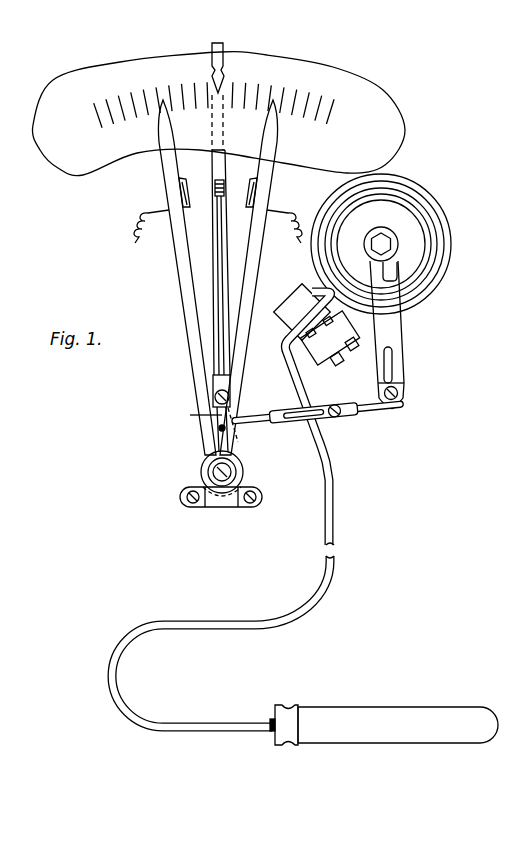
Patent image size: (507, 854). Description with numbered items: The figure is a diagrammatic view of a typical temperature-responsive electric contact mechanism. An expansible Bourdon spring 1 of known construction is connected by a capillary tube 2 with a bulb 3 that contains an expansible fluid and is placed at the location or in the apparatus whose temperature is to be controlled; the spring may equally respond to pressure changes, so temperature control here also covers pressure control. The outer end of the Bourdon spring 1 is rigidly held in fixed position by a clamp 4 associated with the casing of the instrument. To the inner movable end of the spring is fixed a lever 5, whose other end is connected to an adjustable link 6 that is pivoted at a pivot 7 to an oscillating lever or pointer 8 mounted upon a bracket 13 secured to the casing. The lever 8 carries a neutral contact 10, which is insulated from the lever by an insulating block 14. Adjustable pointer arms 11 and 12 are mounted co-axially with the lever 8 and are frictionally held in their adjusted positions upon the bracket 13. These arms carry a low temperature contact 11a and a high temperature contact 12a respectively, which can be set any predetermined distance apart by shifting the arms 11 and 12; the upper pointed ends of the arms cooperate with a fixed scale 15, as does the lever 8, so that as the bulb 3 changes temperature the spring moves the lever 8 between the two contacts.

The Bourdon spring 1 is at (445, 237).
The capillary tube 2 is at (333, 512).
The bulb 3 is at (398, 713).
The clamp 4 is at (296, 298).
The lever 5 is at (398, 327).
The adjustable link 6 is at (357, 414).
The pivot 7 is at (219, 429).
The oscillating lever or pointer 8 is at (214, 286).
The neutral contact 10 is at (214, 190).
The pointer arm 11 is at (181, 256).
The low temperature contact 11a is at (182, 186).
The pointer arm 12 is at (258, 251).
The high temperature contact 12a is at (257, 188).
The bracket 13 is at (214, 508).
The insulating block 14 is at (218, 384).
The fixed scale 15 is at (135, 153).